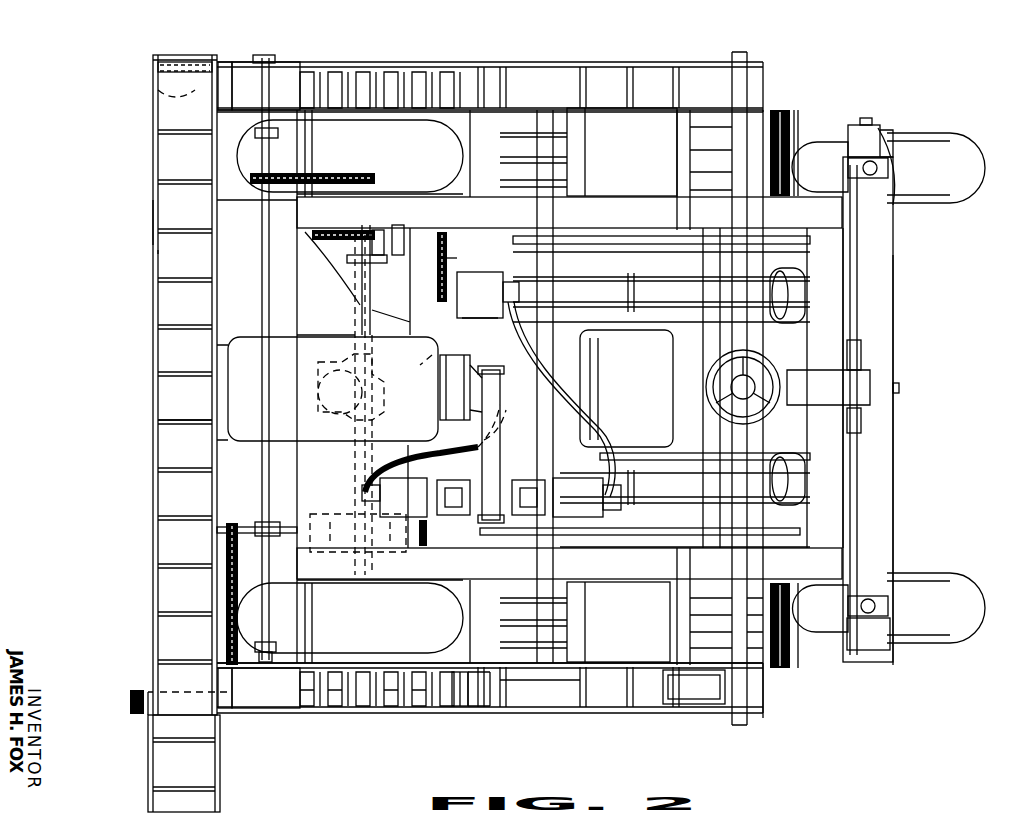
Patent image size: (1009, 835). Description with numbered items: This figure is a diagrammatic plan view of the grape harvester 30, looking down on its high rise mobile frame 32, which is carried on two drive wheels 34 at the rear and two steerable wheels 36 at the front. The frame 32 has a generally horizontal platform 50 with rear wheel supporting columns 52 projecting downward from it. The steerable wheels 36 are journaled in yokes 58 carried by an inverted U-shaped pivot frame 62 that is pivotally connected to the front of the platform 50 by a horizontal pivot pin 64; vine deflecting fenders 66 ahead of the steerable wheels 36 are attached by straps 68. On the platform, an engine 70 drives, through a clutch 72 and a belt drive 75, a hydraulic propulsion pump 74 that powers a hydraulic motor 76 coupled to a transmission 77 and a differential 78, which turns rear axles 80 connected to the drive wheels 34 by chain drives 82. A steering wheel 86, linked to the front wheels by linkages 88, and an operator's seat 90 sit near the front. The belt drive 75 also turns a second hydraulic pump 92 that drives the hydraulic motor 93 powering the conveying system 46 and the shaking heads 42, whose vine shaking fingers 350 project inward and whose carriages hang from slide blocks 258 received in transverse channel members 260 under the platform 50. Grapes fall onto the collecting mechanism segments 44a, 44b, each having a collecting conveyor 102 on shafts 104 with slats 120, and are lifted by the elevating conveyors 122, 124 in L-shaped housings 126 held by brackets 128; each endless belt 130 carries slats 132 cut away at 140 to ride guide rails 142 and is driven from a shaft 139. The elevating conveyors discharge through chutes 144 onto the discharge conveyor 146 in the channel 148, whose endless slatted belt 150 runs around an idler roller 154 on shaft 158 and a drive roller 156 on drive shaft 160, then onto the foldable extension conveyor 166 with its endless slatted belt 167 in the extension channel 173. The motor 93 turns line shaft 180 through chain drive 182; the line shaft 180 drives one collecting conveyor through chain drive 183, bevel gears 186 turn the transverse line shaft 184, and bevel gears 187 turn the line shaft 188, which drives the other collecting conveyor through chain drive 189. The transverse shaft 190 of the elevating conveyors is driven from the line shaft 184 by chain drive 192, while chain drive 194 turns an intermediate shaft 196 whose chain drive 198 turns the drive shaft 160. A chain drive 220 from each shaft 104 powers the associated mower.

The grape harvester 30 is at (72, 130).
The high rise mobile frame 32 is at (852, 283).
The drive wheels 34 is at (350, 386).
The steerable wheels 36 is at (820, 387).
The shaking heads 42 is at (603, 106).
The collecting mechanism segment 44a is at (668, 460).
The collecting mechanism segment 44b is at (693, 310).
The conveying system 46 is at (150, 352).
The horizontal platform 50 is at (297, 278).
The rear wheel supporting columns 52 is at (396, 200).
The yokes 58 is at (883, 125).
The pivot frame 62 is at (900, 291).
The horizontal pivot pin 64 is at (900, 389).
The vine deflecting fenders 66 is at (958, 148).
The straps 68 is at (893, 148).
The engine 70 is at (333, 389).
The clutch 72 is at (460, 368).
The hydraulic propulsion pump 74 is at (416, 497).
The belt drive 75 is at (501, 441).
The hydraulic motor 76 is at (522, 377).
The transmission 77 is at (432, 356).
The differential 78 is at (316, 372).
The rear axles 80 is at (356, 301).
The chain drives 82 is at (330, 232).
The steering wheel 86 is at (776, 370).
The linkages 88 is at (860, 321).
The operator's seat 90 is at (626, 388).
The second hydraulic pump 92 is at (566, 497).
The hydraulic motor 93 is at (488, 295).
The collecting conveyor 102 is at (678, 120).
The shaft 104 is at (780, 110).
The cross bars or slats 120 is at (690, 156).
The elevating conveyor 122 is at (396, 715).
The elevating conveyor 124 is at (397, 60).
The L-shaped housing 126 is at (452, 716).
The brackets 128 is at (313, 605).
The endless belt 130 is at (548, 700).
The bars or slats 132 is at (342, 707).
The shaft 139 is at (275, 650).
The cut away 140 is at (418, 668).
The guide rails 142 is at (694, 687).
The chutes 144 is at (232, 70).
The discharge conveyor 146 is at (150, 420).
The conveyor channel or well 148 is at (153, 222).
The endless slatted belt 150 is at (167, 250).
The idler roller 154 is at (158, 100).
The drive roller 156 is at (163, 686).
The shaft 158 is at (153, 77).
The drive shaft 160 is at (132, 697).
The foldable extension conveyor 166 is at (146, 754).
The endless slatted belt 167 is at (207, 779).
The extension channel 173 is at (222, 745).
The line shaft 180 is at (683, 241).
The chain drive 182 is at (450, 259).
The chain drive 183 is at (792, 118).
The transverse line shaft 184 is at (372, 300).
The bevel gears 186 is at (385, 262).
The bevel gears 187 is at (372, 561).
The line shaft 188 is at (630, 540).
The chain drive 189 is at (790, 663).
The transverse shaft 190 is at (262, 222).
The chain drive 192 is at (340, 174).
The chain drive 194 is at (424, 546).
The intermediate shaft 196 is at (273, 525).
The chain drive 198 is at (225, 592).
The chain drive 220 is at (793, 134).
The slide block 258 is at (578, 238).
The channel members 260 is at (742, 460).
The vine shaking fingers 350 is at (636, 284).